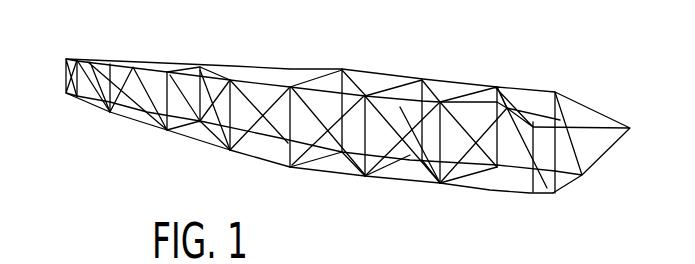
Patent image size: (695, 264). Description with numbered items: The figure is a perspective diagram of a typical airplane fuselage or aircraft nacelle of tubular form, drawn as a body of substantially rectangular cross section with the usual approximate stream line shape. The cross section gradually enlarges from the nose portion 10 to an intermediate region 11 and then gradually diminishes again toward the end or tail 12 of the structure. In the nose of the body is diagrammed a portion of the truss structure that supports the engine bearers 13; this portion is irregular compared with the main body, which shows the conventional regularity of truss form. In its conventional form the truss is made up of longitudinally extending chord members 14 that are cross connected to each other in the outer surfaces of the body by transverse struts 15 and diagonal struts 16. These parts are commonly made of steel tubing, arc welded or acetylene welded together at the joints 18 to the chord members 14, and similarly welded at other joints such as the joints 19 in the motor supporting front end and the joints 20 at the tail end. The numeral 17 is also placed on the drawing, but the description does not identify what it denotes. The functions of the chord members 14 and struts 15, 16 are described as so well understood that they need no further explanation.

The nose portion 10 is at (570, 112).
The intermediate region 11 is at (405, 72).
The end or tail 12 is at (66, 68).
The engine bearers 13 is at (610, 133).
The chord members 14 is at (290, 66).
The transverse struts 15 is at (292, 166).
The diagonal struts 16 is at (185, 72).
The diagonal brace 17 is at (303, 138).
The joints 18 is at (200, 90).
The joints in the motor supporting front end 19 is at (527, 190).
The joints at the tail end 20 is at (77, 59).